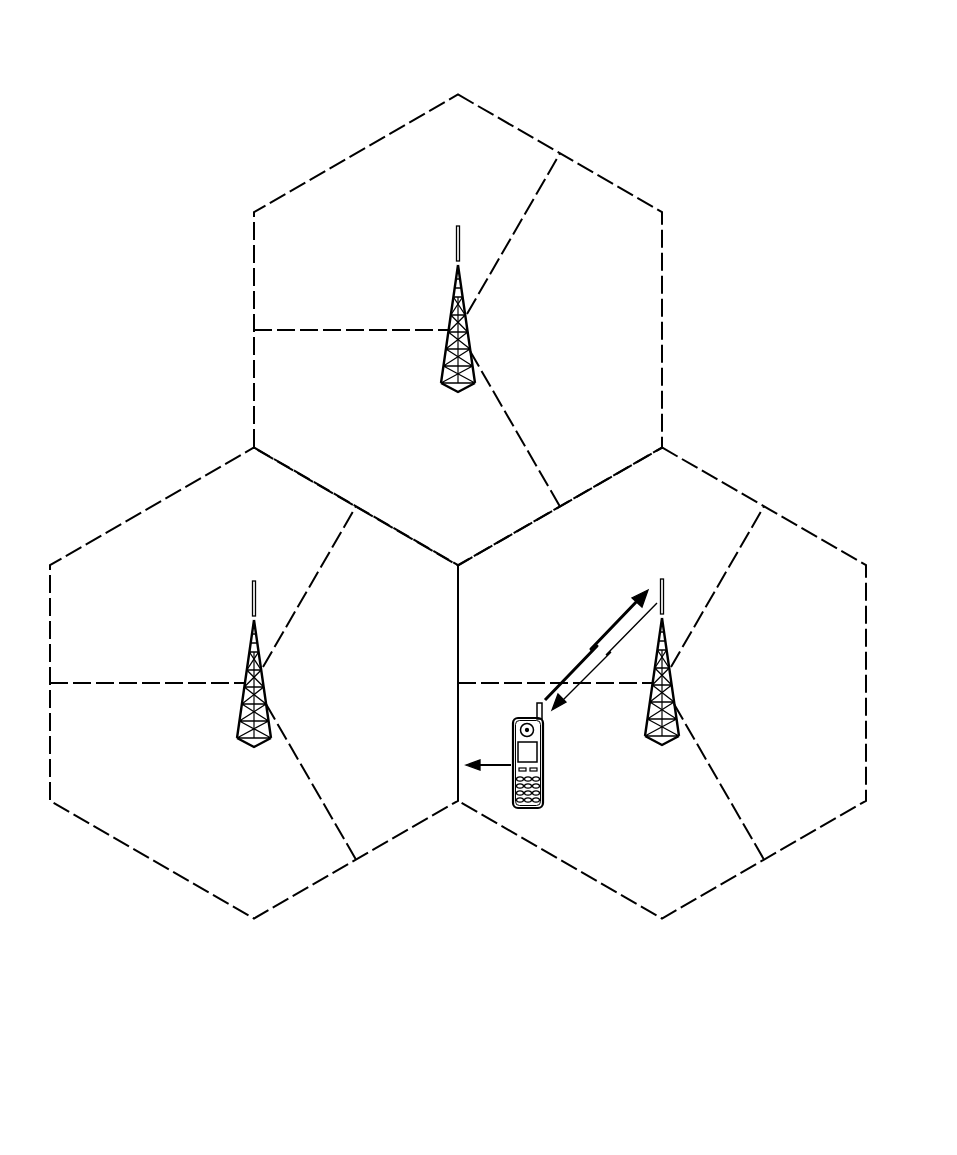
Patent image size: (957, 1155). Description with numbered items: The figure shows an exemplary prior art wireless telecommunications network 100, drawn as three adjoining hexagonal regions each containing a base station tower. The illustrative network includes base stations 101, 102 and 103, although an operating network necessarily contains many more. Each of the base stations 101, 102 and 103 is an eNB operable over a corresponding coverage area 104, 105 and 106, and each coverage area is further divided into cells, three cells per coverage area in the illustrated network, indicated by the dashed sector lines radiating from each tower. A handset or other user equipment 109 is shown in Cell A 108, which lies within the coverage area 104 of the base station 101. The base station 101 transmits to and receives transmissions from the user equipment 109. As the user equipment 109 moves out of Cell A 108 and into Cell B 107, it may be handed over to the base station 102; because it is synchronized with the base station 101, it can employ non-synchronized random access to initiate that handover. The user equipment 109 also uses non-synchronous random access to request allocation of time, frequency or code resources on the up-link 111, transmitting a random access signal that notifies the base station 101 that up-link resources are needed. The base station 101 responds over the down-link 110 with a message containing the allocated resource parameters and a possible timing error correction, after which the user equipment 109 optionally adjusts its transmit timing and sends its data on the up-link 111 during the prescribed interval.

The wireless telecommunications network 100 is at (251, 82).
The base station 101 is at (675, 695).
The base station 102 is at (251, 641).
The base station 103 is at (455, 287).
The coverage area 104 is at (800, 841).
The coverage area 105 is at (150, 858).
The coverage area 106 is at (664, 326).
The Cell B 107 is at (410, 801).
The Cell A 108 is at (670, 871).
The user equipment 109 is at (545, 775).
The down-link 110 is at (586, 680).
The up-link 111 is at (613, 631).